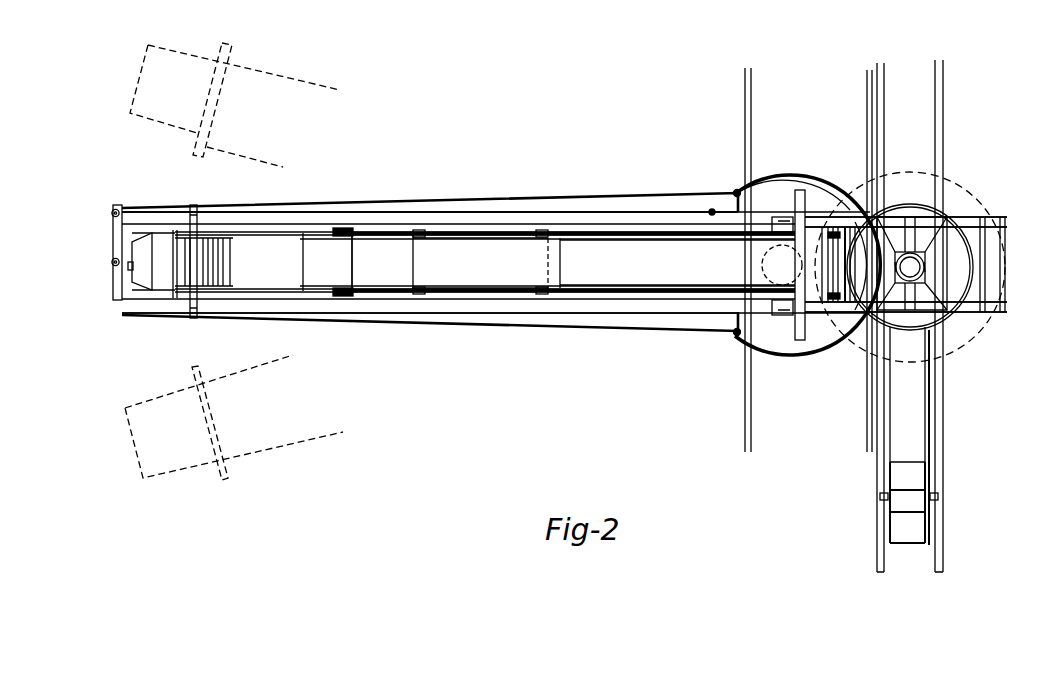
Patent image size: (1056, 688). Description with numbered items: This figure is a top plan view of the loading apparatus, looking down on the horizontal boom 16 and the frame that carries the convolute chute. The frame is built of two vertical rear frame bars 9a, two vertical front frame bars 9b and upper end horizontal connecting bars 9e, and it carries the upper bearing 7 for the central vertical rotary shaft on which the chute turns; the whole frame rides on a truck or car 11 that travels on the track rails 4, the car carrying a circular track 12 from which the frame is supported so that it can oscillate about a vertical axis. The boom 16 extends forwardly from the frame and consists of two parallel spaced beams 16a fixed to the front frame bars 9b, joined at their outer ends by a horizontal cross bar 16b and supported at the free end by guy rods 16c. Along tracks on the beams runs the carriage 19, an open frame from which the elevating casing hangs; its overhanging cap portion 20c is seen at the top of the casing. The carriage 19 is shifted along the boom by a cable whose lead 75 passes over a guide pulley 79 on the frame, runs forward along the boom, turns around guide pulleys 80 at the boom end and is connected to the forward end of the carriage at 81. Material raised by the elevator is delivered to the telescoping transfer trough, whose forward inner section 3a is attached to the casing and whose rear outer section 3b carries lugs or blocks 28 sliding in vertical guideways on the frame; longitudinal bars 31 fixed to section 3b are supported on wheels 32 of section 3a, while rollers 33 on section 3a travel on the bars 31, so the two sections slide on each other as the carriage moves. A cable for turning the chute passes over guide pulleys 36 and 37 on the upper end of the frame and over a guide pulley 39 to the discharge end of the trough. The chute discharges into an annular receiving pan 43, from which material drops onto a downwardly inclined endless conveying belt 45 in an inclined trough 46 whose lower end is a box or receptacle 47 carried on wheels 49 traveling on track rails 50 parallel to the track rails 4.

The guide pulleys 80 is at (111, 213).
The cable connection point 81 is at (128, 266).
The horizontal cross bar 16b is at (118, 297).
The carriage 19 is at (160, 293).
The parallel spaced beams 16a is at (660, 170).
The overhanging cap portion 20c is at (308, 250).
The supporting wheels 32 is at (360, 230).
The rollers 33 is at (420, 230).
The guy rods 16c is at (548, 346).
The cable lead 75 is at (598, 212).
The guide pulley 79 is at (712, 209).
The circular track 12 is at (790, 177).
The truck or car 11 is at (806, 180).
The lugs or blocks 28 is at (836, 230).
The annular receiving pan or receptacle 43 is at (932, 215).
The vertical rear frame bars 9a is at (1007, 221).
The upper end horizontal connecting bars 9e is at (995, 265).
The upper bearing 7 is at (920, 270).
The guide pulley 39 is at (805, 270).
The longitudinal bars 31 is at (445, 296).
The forward inner trough section 3a is at (503, 275).
The horizontal boom 16 is at (496, 272).
The rear outer trough section 3b is at (696, 272).
The vertical front frame bars 9b is at (808, 338).
The guide pulley 36 is at (845, 305).
The guide pulley 37 is at (858, 340).
The track rails 4 is at (862, 444).
The endless conveying belt 45 is at (913, 411).
The downwardly inclined trough 46 is at (928, 447).
The carrying wheels 49 is at (935, 497).
The box or receptacle 47 is at (913, 525).
The track rails 50 is at (930, 574).